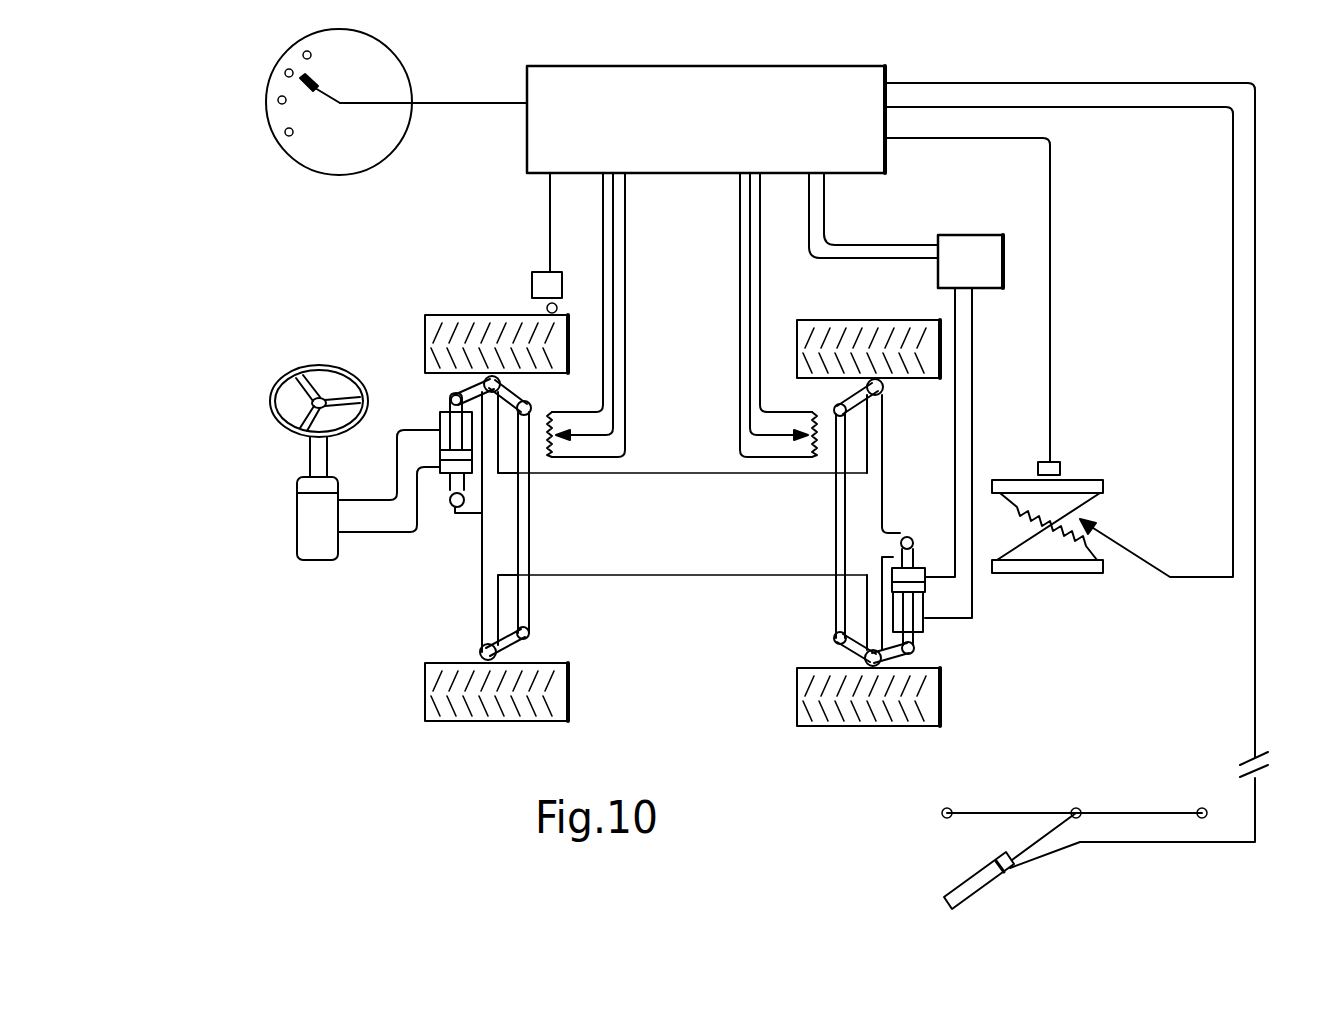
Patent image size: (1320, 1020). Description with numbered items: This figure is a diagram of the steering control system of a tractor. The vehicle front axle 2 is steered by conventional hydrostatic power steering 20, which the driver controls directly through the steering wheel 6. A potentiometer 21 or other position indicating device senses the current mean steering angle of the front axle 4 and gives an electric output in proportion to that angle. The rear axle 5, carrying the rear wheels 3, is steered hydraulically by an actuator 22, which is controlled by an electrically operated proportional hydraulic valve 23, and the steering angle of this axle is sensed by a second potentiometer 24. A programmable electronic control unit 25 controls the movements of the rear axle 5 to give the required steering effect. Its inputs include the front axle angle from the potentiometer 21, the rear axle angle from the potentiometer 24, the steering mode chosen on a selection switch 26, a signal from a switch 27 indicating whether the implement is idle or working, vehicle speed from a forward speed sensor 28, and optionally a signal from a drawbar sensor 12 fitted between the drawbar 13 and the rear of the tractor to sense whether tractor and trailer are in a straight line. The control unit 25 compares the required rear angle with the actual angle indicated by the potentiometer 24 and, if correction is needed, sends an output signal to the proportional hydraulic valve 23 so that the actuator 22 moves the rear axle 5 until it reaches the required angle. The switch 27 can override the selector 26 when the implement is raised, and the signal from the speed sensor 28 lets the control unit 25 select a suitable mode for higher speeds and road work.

The front axle 2 is at (445, 332).
The rear wheels 3 is at (830, 330).
The axle 4 is at (530, 558).
The rear axle 5 is at (838, 552).
The steering wheel 6 is at (268, 420).
The drawbar sensor 12 is at (995, 875).
The drawbar 13 is at (1025, 813).
The hydrostatic power steering 20 is at (447, 484).
The potentiometer 21 is at (583, 447).
The actuator 22 is at (935, 625).
The proportional hydraulic valve 23 is at (958, 243).
The potentiometer 24 is at (783, 447).
The programmable electronic control unit 25 is at (700, 80).
The selection switch 26 is at (325, 160).
The switch 27 is at (1058, 460).
The forward speed sensor 28 is at (535, 283).